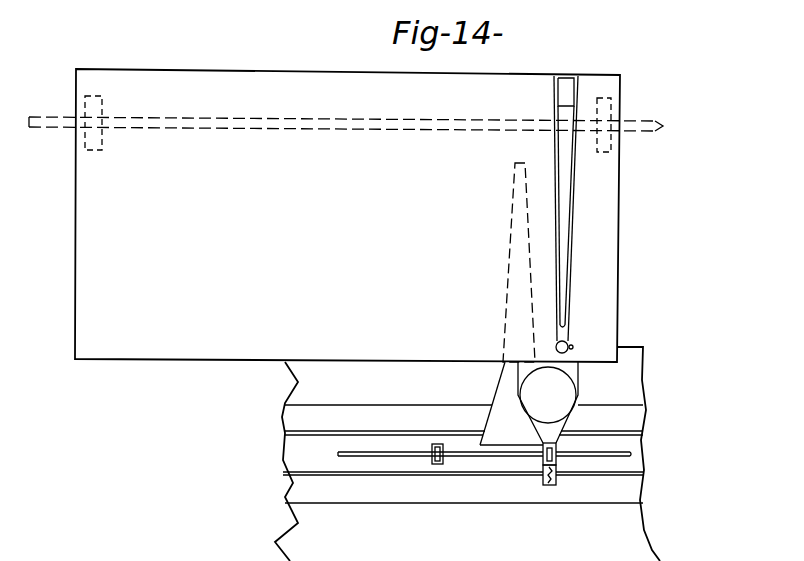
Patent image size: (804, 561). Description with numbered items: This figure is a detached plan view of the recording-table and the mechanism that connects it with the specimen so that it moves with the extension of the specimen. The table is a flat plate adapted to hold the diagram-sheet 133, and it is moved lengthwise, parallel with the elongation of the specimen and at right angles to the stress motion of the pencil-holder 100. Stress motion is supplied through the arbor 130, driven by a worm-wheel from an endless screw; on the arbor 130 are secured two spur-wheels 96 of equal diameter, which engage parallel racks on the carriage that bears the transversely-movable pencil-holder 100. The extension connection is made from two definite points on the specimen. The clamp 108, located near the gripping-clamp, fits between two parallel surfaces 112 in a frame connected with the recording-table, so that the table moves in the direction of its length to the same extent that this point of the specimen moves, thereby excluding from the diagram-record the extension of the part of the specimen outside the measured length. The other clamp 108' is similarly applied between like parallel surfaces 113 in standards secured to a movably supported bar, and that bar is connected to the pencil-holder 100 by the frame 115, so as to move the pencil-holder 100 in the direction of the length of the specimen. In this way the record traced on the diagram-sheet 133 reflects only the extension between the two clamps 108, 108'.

The spur-wheels 96 is at (97, 150).
The pencil-holder 100 is at (565, 248).
The clamp 108 is at (587, 476).
The clamp 108' is at (440, 475).
The parallel surfaces 112 is at (558, 459).
The parallel surfaces 113 is at (432, 456).
The frame 115 is at (507, 290).
The arbor 130 is at (663, 128).
The diagram-sheet 133 is at (347, 215).